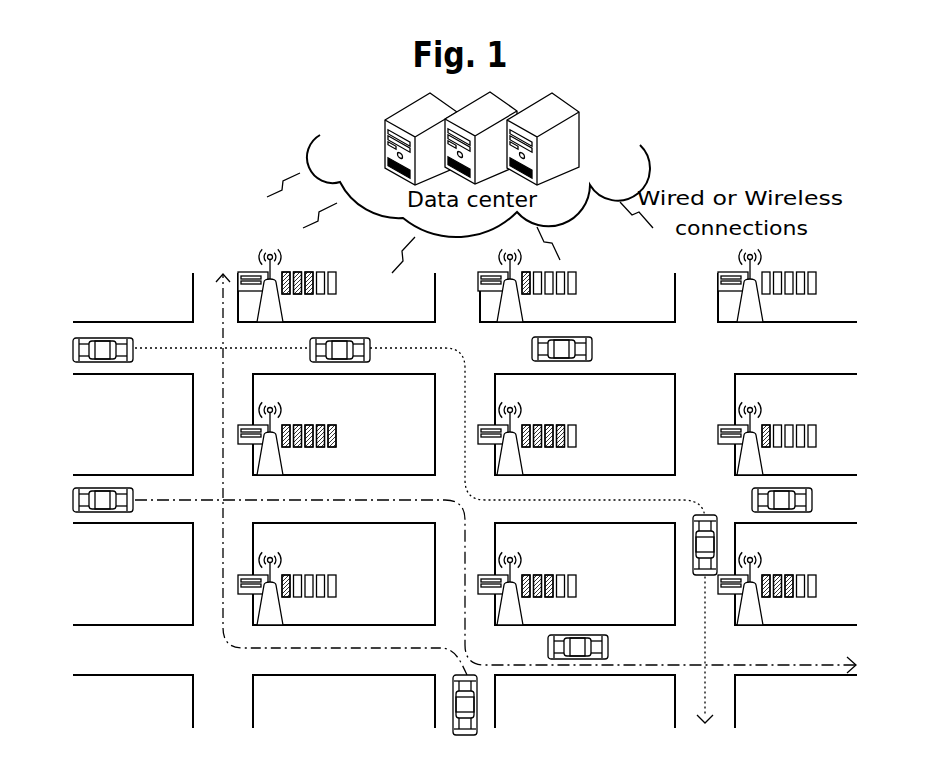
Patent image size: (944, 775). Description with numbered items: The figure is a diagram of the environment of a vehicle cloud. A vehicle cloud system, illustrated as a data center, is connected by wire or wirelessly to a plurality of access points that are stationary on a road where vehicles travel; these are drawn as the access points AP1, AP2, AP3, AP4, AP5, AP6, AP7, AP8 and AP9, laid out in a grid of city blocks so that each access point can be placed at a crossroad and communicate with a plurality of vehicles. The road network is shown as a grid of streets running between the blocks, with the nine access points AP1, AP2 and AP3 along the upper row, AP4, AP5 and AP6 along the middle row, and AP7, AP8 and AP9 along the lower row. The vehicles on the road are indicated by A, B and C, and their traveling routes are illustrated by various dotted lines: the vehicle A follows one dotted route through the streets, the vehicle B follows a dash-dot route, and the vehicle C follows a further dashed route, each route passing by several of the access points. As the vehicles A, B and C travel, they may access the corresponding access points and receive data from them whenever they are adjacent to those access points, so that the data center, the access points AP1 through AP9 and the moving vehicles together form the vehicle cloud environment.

The access point AP1 is at (287, 285).
The access point AP2 is at (527, 285).
The access point AP3 is at (767, 285).
The access point AP4 is at (287, 438).
The access point AP5 is at (527, 438).
The access point AP6 is at (767, 438).
The access point AP7 is at (287, 588).
The access point AP8 is at (527, 588).
The access point AP9 is at (767, 588).
The vehicle A is at (384, 530).
The vehicle B is at (456, 580).
The vehicle C is at (346, 520).